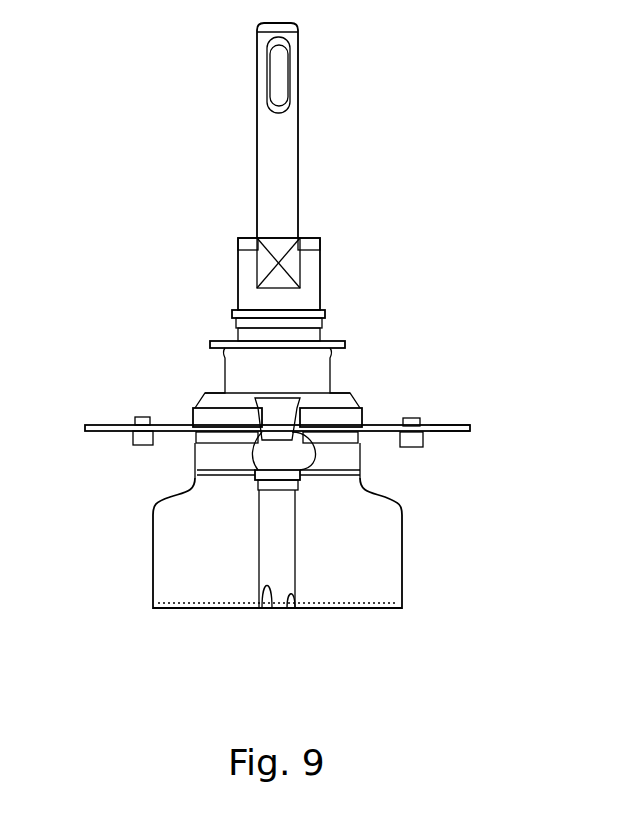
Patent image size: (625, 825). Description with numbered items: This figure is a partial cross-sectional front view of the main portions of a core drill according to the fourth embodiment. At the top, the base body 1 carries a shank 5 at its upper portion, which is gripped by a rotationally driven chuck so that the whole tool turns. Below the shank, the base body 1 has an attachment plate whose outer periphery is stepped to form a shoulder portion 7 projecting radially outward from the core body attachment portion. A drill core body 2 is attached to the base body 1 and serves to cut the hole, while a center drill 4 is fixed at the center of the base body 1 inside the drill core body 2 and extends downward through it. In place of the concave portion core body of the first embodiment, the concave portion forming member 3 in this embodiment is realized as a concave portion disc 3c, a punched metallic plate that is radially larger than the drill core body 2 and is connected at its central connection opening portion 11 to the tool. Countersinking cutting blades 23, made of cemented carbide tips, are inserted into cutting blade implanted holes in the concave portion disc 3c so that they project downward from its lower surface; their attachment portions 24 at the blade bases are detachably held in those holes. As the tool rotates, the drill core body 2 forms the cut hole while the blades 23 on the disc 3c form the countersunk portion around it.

The base body 1 is at (330, 275).
The drill core body 2 is at (402, 565).
The concave portion forming member 3 is at (112, 423).
The concave portion disc 3c is at (455, 424).
The center drill 4 is at (288, 605).
The shank 5 is at (296, 153).
The shoulder portion 7 is at (197, 407).
The plunger 11 is at (375, 450).
The countersinking cutting blade 23 is at (408, 447).
The attachment portion 24 is at (412, 417).